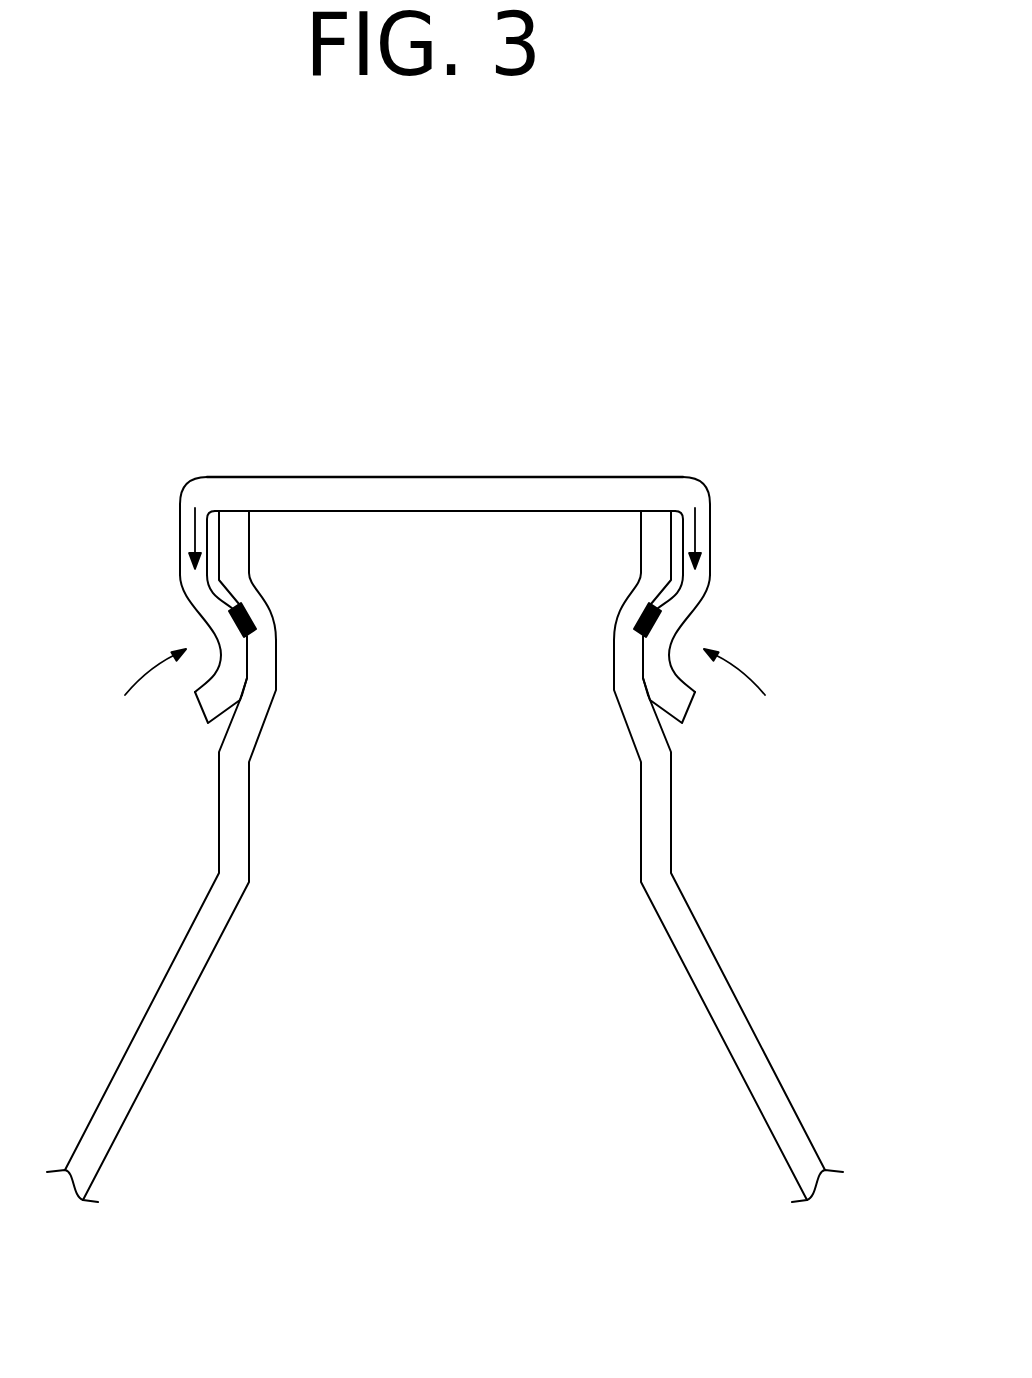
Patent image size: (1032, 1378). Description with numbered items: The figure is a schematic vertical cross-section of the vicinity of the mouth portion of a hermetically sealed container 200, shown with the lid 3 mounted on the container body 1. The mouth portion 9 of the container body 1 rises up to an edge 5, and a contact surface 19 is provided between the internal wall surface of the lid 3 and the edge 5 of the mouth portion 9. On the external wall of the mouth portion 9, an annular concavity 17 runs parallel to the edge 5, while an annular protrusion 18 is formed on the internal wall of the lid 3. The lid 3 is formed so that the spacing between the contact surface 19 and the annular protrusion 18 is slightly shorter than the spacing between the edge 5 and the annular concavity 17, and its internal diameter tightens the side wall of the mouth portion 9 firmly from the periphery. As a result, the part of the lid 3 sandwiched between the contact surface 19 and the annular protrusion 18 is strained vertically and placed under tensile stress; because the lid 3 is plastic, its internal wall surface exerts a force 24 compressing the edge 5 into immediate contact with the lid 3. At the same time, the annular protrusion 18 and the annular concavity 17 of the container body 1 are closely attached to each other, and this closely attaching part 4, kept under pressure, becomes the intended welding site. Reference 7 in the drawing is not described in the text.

The hermetically sealed container 200 is at (506, 553).
The container body 1 is at (460, 856).
The lid 3 is at (486, 471).
The edge of the mouth portion 5 is at (661, 511).
The contact surface 19 is at (235, 510).
The mouth portion 9 is at (250, 537).
The closely attaching part 4 is at (254, 618).
The annular protrusion 18 is at (241, 705).
The annular concavity 17 is at (228, 732).
The right free end 7 is at (688, 725).
The force 24 is at (178, 545).